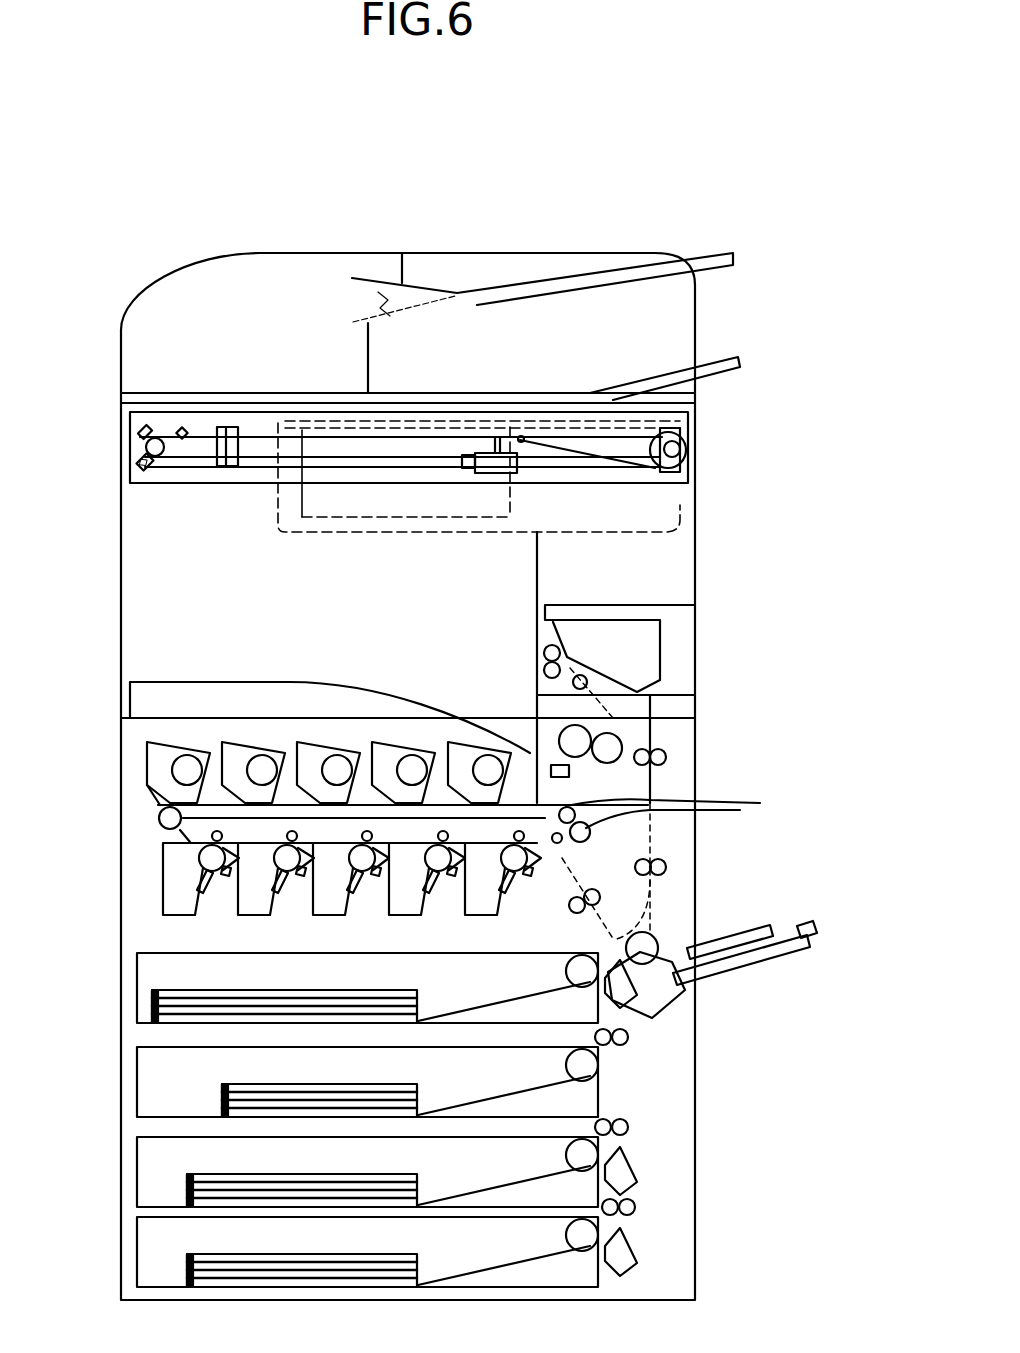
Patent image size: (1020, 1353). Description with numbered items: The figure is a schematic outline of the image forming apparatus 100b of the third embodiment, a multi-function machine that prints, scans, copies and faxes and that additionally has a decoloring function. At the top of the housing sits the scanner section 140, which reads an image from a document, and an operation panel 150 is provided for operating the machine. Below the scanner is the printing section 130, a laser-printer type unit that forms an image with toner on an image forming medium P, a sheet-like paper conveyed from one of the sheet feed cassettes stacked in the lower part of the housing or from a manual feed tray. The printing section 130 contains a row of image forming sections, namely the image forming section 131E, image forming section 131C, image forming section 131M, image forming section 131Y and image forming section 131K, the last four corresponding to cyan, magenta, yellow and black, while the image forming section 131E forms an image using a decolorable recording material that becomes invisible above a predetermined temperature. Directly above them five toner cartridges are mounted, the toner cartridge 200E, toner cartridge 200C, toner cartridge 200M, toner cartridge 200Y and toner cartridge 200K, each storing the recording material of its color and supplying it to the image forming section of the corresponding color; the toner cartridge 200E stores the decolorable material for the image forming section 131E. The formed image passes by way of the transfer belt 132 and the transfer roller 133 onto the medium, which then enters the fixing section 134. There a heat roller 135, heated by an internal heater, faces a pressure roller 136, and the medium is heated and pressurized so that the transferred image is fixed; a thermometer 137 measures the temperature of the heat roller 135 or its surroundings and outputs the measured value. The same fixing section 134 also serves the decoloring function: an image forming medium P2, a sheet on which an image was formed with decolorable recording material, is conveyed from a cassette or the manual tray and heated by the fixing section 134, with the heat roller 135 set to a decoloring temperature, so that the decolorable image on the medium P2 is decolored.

The image forming apparatus 100b is at (648, 226).
The scanner section 140 is at (130, 428).
The operation panel 150 is at (682, 503).
The fixing section 134 is at (652, 693).
The heat roller 135 is at (530, 660).
The pressure roller 136 is at (563, 724).
The thermometer 137 is at (553, 762).
The transfer belt 132 is at (563, 795).
The transfer roller 133 is at (560, 802).
The printing section 130 is at (607, 838).
The toner cartridge 200E is at (147, 750).
The toner cartridge 200C is at (225, 780).
The toner cartridge 200M is at (300, 792).
The toner cartridge 200Y is at (375, 796).
The toner cartridge 200K is at (450, 800).
The image forming section 131E is at (178, 890).
The image forming section 131C is at (253, 897).
The image forming section 131M is at (330, 898).
The image forming section 131Y is at (408, 900).
The image forming section 131K is at (487, 900).
The image forming medium P is at (188, 1188).
The image forming medium P2 is at (186, 1266).